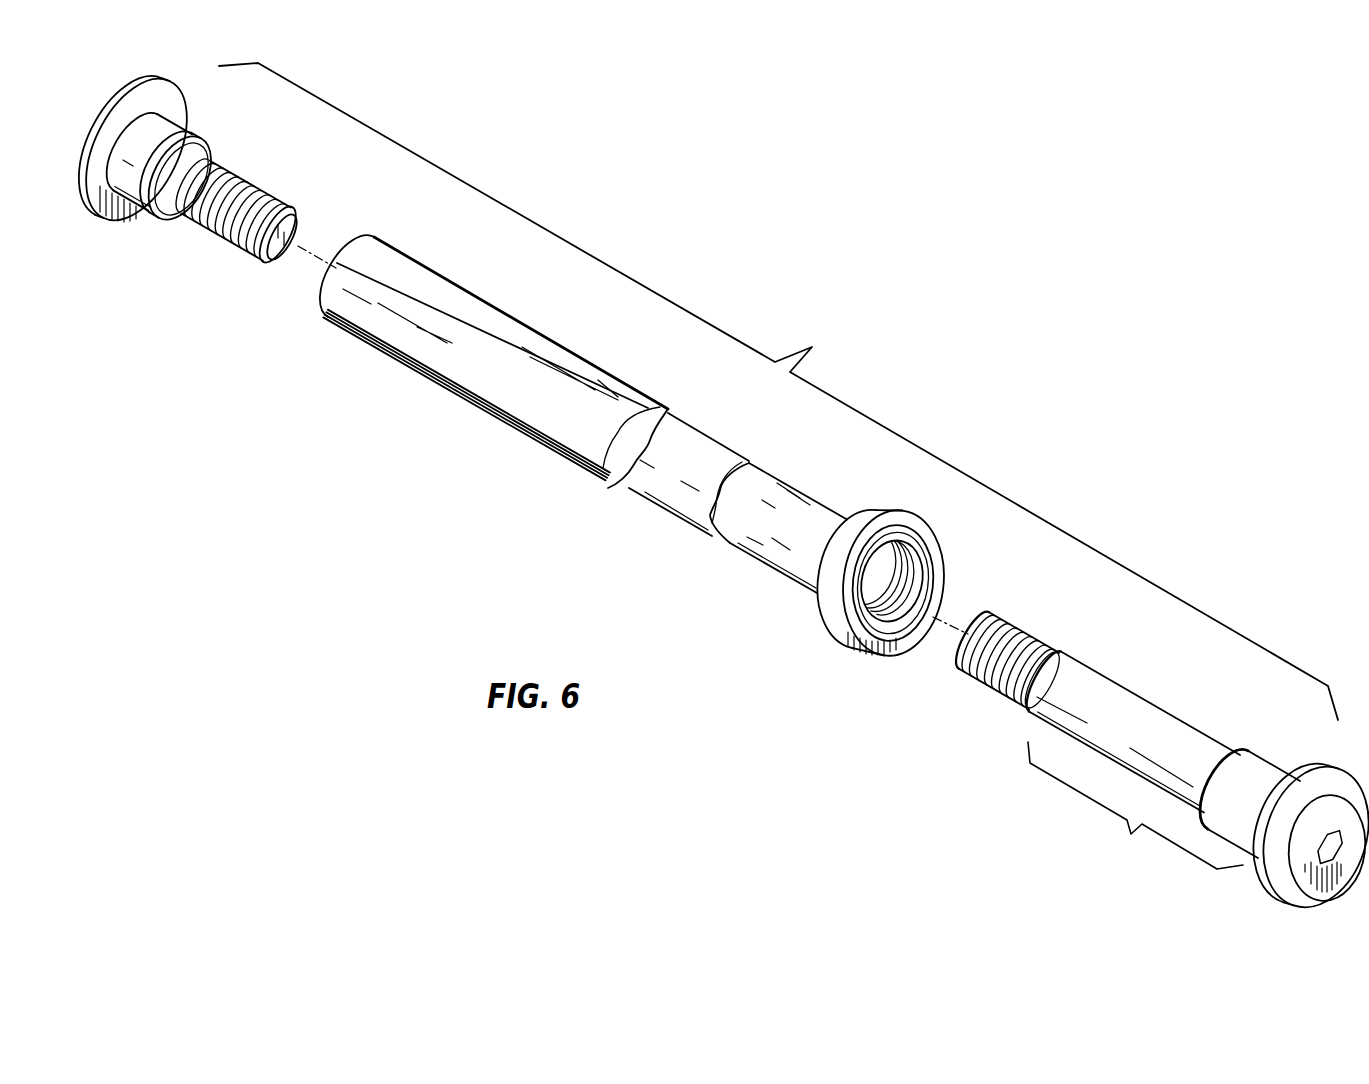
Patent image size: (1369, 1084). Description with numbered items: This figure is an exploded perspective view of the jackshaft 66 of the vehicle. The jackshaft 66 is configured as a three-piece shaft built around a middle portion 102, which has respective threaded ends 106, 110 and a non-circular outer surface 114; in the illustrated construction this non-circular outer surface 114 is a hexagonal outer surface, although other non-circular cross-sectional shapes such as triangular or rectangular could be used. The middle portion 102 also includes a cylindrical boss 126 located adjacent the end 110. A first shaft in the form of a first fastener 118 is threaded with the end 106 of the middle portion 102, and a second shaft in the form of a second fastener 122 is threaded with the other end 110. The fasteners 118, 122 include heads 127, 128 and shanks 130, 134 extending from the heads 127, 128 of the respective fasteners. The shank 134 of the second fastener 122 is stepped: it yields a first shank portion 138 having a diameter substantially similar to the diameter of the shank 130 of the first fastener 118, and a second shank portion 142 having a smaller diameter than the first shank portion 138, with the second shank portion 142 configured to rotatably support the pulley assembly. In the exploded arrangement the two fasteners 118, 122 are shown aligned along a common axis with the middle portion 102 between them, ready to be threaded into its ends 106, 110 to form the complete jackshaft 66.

The jackshaft 66 is at (778, 391).
The middle portion 102 is at (598, 480).
The threaded end 106 is at (456, 361).
The threaded end 110 is at (875, 628).
The non-circular outer surface 114 is at (503, 384).
The first fastener 118 is at (161, 197).
The second fastener 122 is at (1162, 759).
The cylindrical boss 126 is at (810, 571).
The head 127 is at (92, 172).
The head 128 is at (1282, 897).
The shank 130 is at (173, 123).
The shank 134 is at (1028, 850).
The first shank portion 138 is at (1260, 760).
The second shank portion 142 is at (1093, 673).